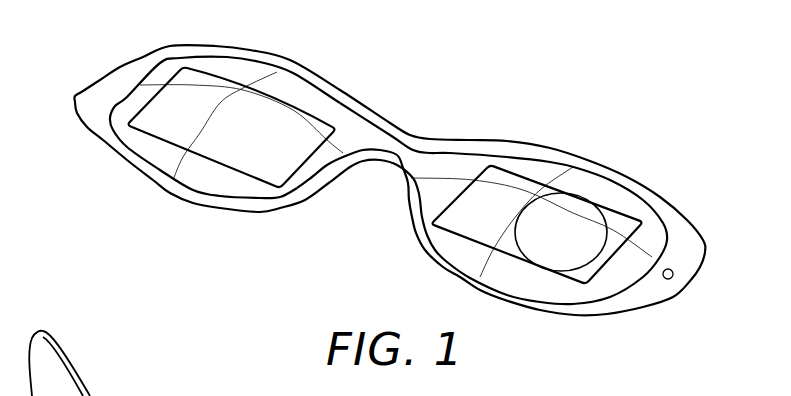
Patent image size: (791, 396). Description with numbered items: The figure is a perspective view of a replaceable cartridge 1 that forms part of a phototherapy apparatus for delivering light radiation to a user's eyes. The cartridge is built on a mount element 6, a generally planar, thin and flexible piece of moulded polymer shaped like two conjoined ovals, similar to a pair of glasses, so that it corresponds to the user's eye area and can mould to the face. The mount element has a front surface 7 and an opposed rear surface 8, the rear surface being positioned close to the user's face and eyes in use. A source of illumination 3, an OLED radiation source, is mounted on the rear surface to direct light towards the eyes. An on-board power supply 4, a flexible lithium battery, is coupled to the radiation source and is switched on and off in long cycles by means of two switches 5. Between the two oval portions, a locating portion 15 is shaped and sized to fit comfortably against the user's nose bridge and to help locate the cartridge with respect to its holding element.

The replaceable cartridge 1 is at (278, 99).
The source of illumination 3 is at (458, 243).
The on-board power supply 4 is at (543, 253).
The switches 5 is at (674, 276).
The mount element 6 is at (592, 158).
The front surface 7 is at (118, 86).
The rear surface 8 is at (156, 187).
The locating portion 15 is at (387, 160).